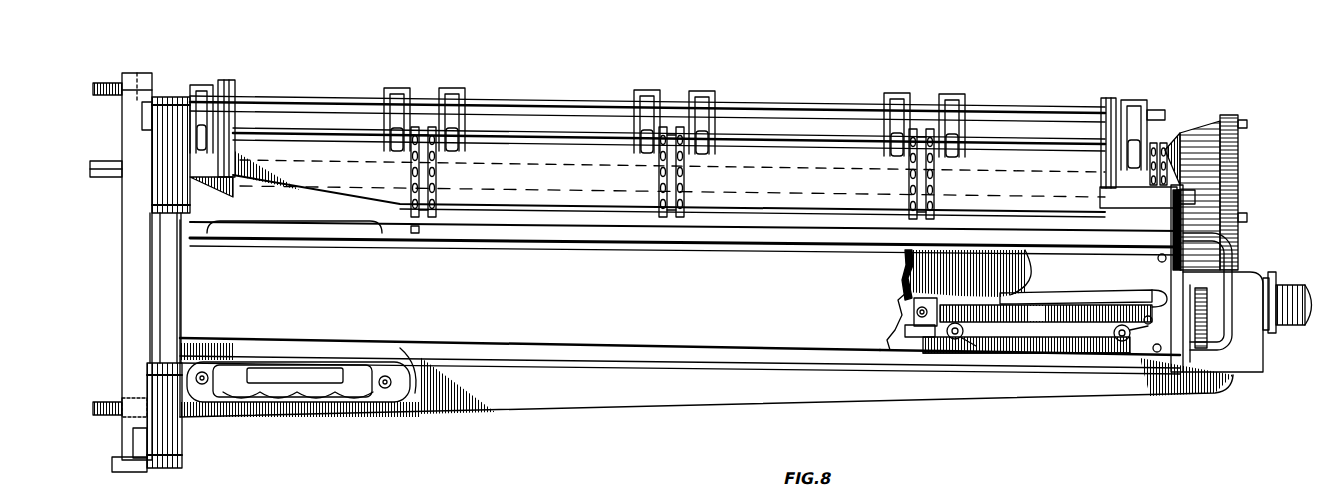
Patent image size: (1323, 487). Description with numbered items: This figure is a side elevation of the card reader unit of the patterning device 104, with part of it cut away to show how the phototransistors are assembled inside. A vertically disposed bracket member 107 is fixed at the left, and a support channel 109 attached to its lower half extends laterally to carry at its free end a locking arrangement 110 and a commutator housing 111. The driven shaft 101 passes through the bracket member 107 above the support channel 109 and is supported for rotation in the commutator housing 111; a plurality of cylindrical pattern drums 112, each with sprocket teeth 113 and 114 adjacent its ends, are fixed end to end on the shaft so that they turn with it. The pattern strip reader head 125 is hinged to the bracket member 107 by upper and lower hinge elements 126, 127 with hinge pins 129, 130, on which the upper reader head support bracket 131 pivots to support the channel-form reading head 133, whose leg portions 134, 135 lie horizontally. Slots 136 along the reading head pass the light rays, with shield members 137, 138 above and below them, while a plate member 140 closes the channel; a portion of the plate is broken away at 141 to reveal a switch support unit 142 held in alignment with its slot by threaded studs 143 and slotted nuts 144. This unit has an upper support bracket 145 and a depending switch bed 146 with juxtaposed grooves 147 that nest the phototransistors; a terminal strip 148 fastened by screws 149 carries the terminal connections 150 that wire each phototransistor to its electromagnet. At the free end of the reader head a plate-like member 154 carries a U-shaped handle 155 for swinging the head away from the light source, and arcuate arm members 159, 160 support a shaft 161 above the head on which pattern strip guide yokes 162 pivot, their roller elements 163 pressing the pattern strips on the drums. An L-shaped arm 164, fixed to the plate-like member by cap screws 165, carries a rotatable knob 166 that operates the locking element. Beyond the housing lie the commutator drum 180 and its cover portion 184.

The driven shaft 101 is at (100, 177).
The patterning device 104 is at (745, 206).
The bracket member 107 is at (135, 73).
The support channel 109 is at (567, 398).
The locking arrangement 110 is at (1289, 342).
The commutator housing 111 is at (1245, 174).
The pattern drums 112 is at (273, 145).
The sprocket teeth 113 is at (433, 140).
The sprocket teeth 114 is at (663, 140).
The pattern strip reader head 125 is at (1059, 360).
The upper hinge element 126 is at (142, 118).
The lower hinge element 127 is at (133, 443).
The hinge pin 129 is at (160, 140).
The hinge pin 130 is at (183, 423).
The upper reader head support bracket 131 is at (273, 215).
The reading head 133 is at (1043, 348).
The leg portion 134 is at (1013, 251).
The leg portion 135 is at (889, 341).
The slots 136 is at (1164, 292).
The shield member 137 is at (790, 234).
The shield member 138 is at (717, 357).
The plate member 140 is at (627, 333).
The broken-away portion 141 is at (905, 284).
The switch support unit 142 is at (1068, 262).
The threaded studs 143 is at (952, 340).
The slotted nuts 144 is at (974, 342).
The upper support bracket 145 is at (1068, 293).
The switch bed 146 is at (913, 297).
The grooves 147 is at (985, 304).
The terminal strip 148 is at (917, 337).
The screws 149 is at (916, 314).
The terminal connections 150 is at (1026, 347).
The plate-like member 154 is at (1172, 237).
The U-shaped handle 155 is at (1225, 250).
The arcuate arm member 159 is at (227, 83).
The arcuate arm member 160 is at (1108, 98).
The shaft 161 is at (975, 112).
The pattern strip guide yokes 162 is at (464, 131).
The roller elements 163 is at (712, 147).
The L-shaped arm 164 is at (1232, 358).
The cap screws 165 is at (1207, 290).
The rotatable knob 166 is at (1270, 310).
The drum 180 is at (1197, 128).
The cover portion 184 is at (1247, 215).